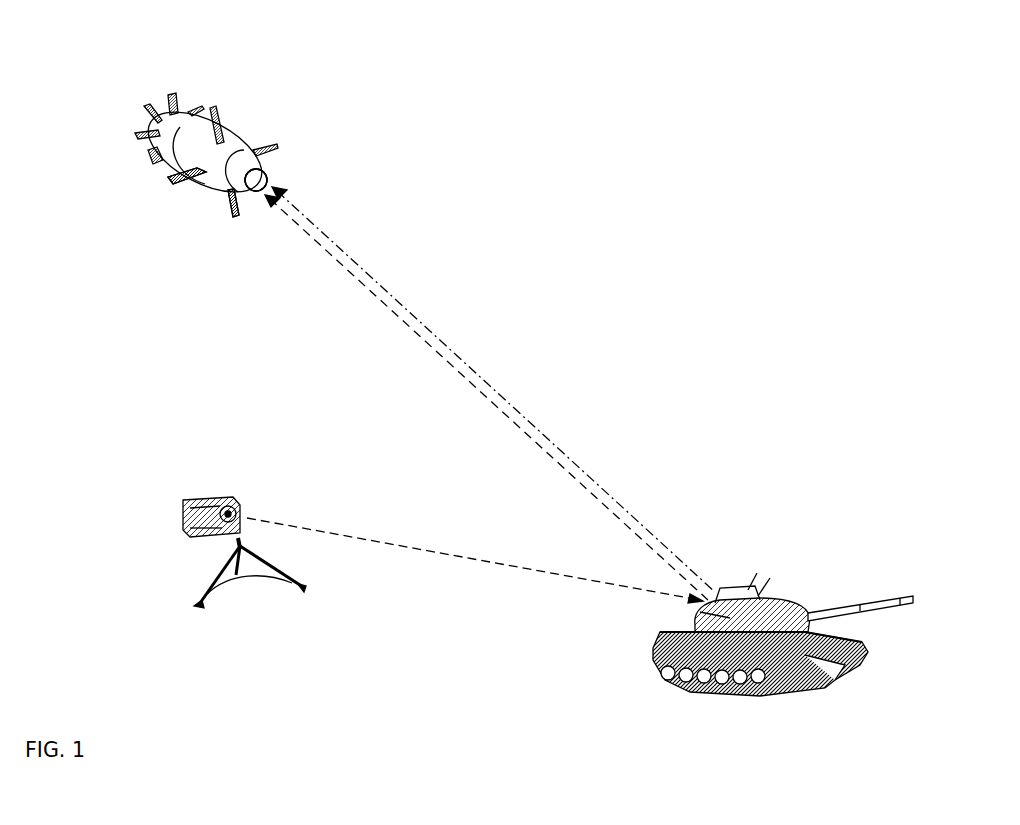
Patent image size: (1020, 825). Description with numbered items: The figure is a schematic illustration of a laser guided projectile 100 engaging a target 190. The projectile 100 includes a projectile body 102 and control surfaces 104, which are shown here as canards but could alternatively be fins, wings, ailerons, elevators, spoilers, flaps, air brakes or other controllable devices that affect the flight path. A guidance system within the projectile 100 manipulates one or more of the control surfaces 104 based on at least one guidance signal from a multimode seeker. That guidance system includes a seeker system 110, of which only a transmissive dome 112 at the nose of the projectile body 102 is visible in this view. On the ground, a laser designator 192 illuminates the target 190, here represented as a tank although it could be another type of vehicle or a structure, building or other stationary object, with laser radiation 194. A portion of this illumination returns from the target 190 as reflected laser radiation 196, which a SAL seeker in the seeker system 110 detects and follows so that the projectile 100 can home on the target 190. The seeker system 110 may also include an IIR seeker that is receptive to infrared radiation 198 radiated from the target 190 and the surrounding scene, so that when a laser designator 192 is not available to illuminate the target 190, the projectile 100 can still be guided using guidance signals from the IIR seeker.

The projectile 100 is at (320, 62).
The projectile body 102 is at (245, 141).
The control surfaces 104 is at (237, 215).
The seeker system 110 is at (266, 176).
The transmissive dome 112 is at (256, 180).
The target 190 is at (747, 588).
The laser designator 192 is at (210, 497).
The laser radiation 194 is at (393, 544).
The reflected laser radiation 196 is at (500, 410).
The infrared radiation 198 is at (507, 403).